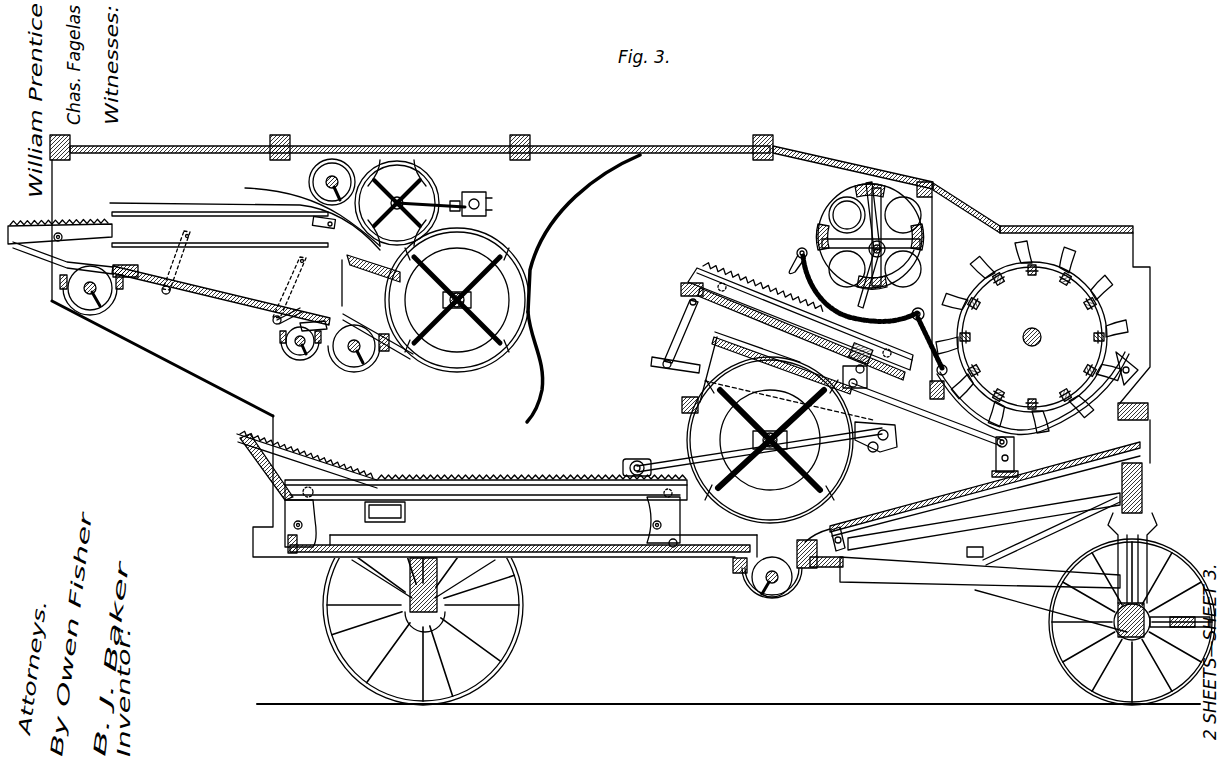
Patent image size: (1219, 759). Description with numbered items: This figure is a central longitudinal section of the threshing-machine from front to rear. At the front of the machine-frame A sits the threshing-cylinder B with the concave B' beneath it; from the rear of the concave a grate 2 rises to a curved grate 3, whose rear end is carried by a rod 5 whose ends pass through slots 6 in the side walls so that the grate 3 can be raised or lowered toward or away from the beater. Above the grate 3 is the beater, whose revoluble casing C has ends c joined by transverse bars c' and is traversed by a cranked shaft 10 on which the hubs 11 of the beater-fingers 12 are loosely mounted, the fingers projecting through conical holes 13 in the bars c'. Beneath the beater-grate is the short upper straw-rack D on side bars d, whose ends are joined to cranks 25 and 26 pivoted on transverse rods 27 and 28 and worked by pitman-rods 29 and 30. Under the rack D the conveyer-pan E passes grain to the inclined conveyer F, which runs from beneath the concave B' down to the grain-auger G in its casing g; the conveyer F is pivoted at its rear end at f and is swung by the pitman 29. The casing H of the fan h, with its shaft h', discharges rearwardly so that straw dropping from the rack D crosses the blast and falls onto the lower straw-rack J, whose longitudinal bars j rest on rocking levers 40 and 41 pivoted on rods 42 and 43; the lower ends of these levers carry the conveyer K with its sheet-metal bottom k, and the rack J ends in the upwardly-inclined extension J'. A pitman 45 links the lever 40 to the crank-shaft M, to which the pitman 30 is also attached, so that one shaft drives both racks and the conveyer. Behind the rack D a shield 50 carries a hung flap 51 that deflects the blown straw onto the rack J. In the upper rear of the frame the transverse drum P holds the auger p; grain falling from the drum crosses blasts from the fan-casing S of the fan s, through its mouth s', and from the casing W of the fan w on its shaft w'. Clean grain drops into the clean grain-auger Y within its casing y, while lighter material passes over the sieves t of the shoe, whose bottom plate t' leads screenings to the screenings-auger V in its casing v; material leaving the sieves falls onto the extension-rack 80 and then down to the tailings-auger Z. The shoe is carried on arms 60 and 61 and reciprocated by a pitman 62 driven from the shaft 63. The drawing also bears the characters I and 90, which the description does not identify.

The machine-frame A is at (820, 150).
The threshing-cylinder B is at (1032, 307).
The concave B' is at (1037, 393).
The revoluble casing C is at (840, 210).
The ends c is at (847, 237).
The transverse bars c' is at (844, 228).
The straw-rack D is at (718, 282).
The side bars d is at (801, 334).
The conveyer-pan E is at (760, 318).
The inclined conveyer F is at (950, 502).
The pivot f is at (853, 546).
The grain-auger G is at (790, 588).
The casing g is at (760, 595).
The fan-casing H is at (835, 488).
The fan h is at (771, 440).
The fan-shaft h' is at (759, 448).
The plate I is at (245, 242).
The lower straw-rack J is at (486, 479).
The upwardly-inclined extension J' is at (295, 465).
The longitudinal bars j is at (565, 498).
The conveyer K is at (578, 557).
The sheet-metal bottom k is at (624, 556).
The crank-shaft M is at (898, 440).
The transverse drum P is at (343, 170).
The auger p is at (310, 180).
The fan-casing S is at (430, 182).
The fan s is at (414, 176).
The mouth s' is at (409, 157).
The screenings-auger V is at (310, 352).
The casing v is at (299, 356).
The fan-casing W is at (490, 362).
The fan w is at (457, 300).
The fan-shaft w' is at (457, 281).
The clean grain-auger Y is at (372, 358).
The casing y is at (358, 372).
The tailings-auger Z is at (78, 296).
The sieves t is at (220, 213).
The bottom metal plate t' is at (221, 300).
The grate 2 is at (965, 350).
The curved grate 3 is at (860, 288).
The rod 5 is at (802, 246).
The slots 6 is at (793, 262).
The cranked shaft 10 is at (918, 280).
The hubs 11 is at (889, 240).
The beater-fingers 12 is at (872, 244).
The conical holes 13 is at (886, 200).
The crank 25 is at (884, 358).
The crank 26 is at (676, 330).
The transverse rod 27 is at (856, 369).
The transverse rod 28 is at (686, 300).
The pitman-rod 29 is at (965, 428).
The pitman-rod 30 is at (675, 373).
The rocking lever 40 is at (680, 515).
The rocking lever 41 is at (286, 515).
The transverse rod 42 is at (650, 524).
The transverse rod 43 is at (292, 529).
The pitman 45 is at (660, 463).
The shield or plate 50 is at (552, 230).
The flap or plate 51 is at (552, 367).
The arm 60 is at (170, 296).
The arm 61 is at (268, 300).
The pitman 62 is at (458, 200).
The shaft 63 is at (493, 204).
The extension-rack 80 is at (60, 224).
The opening 90 is at (406, 513).